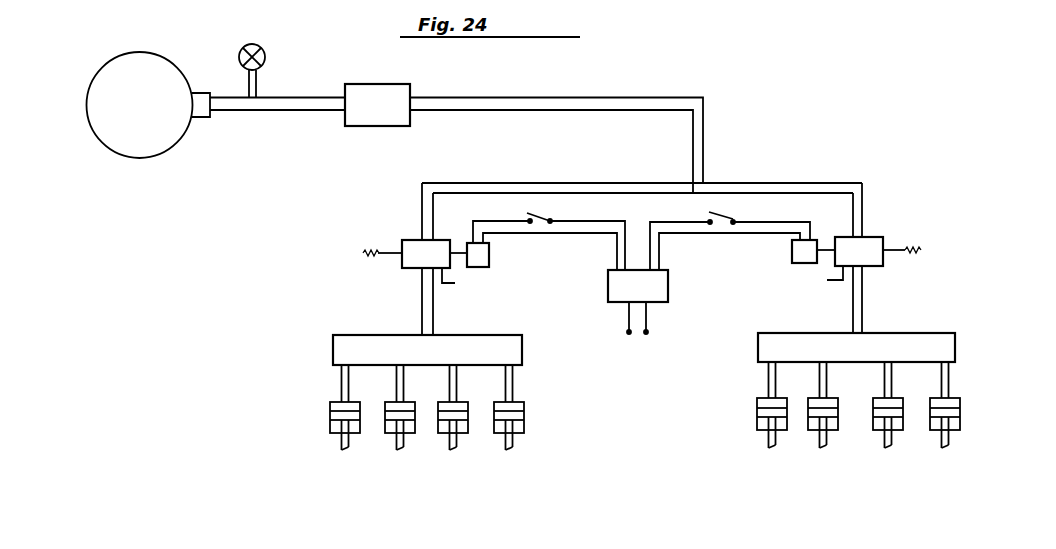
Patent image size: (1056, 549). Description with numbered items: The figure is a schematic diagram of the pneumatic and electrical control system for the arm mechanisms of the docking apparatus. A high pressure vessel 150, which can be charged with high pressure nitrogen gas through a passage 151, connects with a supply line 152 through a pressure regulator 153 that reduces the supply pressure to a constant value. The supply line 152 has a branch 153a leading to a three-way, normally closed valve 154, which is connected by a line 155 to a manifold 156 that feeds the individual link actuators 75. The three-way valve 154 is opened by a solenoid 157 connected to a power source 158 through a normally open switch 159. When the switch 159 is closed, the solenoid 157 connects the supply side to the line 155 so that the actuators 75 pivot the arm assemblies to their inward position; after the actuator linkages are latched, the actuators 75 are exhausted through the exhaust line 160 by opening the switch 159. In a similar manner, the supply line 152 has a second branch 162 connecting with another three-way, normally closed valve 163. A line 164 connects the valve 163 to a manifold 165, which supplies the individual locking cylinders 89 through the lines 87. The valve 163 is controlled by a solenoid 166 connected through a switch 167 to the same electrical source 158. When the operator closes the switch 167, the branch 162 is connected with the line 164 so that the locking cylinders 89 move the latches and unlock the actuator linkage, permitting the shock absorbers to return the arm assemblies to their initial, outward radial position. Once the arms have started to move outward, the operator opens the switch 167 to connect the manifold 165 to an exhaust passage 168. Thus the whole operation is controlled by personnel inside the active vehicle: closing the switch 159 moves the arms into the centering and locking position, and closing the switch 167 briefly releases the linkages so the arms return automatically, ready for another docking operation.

The high pressure vessel 150 is at (141, 60).
The passage 151 is at (262, 69).
The supply line 152 is at (706, 136).
The pressure regulator 153 is at (378, 90).
The branch 153a is at (421, 214).
The three-way, normally closed valve 154 is at (408, 262).
The line 155 is at (421, 313).
The manifold 156 is at (523, 335).
The solenoid 157 is at (477, 268).
The power source 158 is at (660, 302).
The normally open switch 159 is at (543, 217).
The exhaust line 160 is at (455, 283).
The branch 162 is at (863, 199).
The three-way, normally closed valve 163 is at (879, 240).
The line 164 is at (866, 297).
The manifold 165 is at (956, 332).
The solenoid 166 is at (790, 263).
The switch 167 is at (731, 215).
The exhaust passage 168 is at (831, 281).
The link actuator 75 is at (527, 407).
The lines 87 is at (952, 380).
The locking cylinder 89 is at (957, 405).